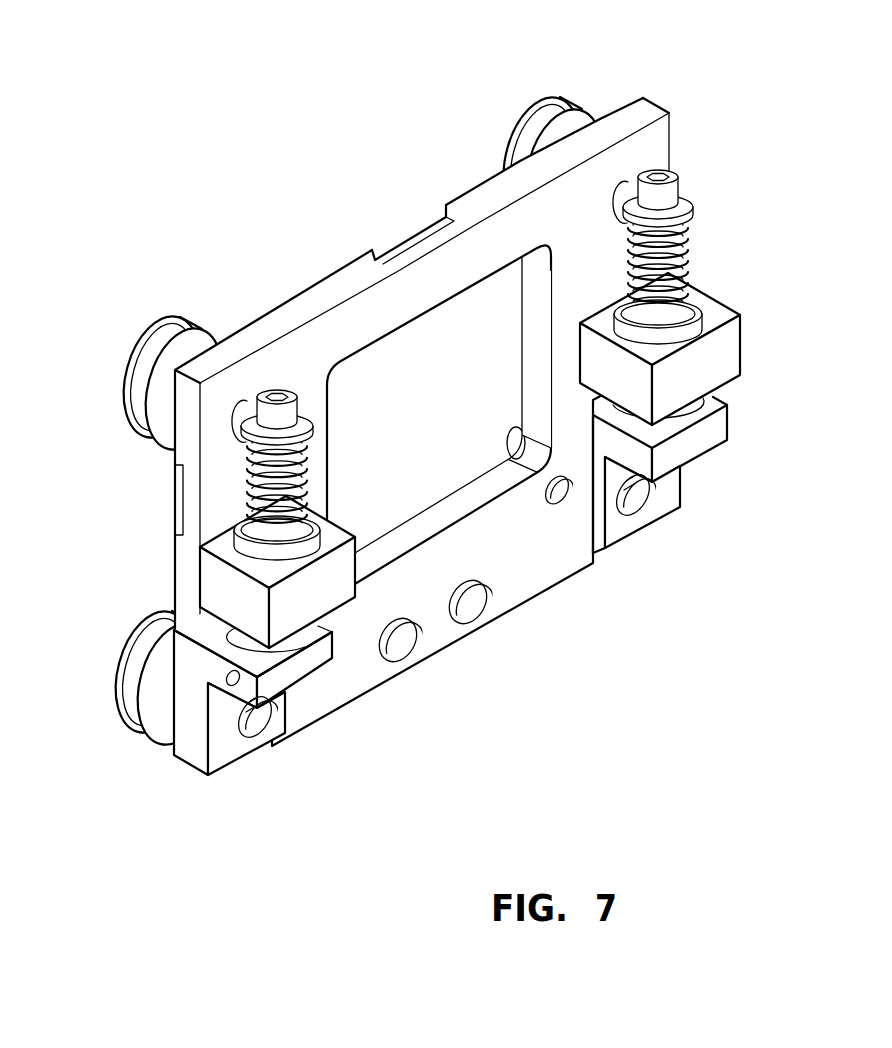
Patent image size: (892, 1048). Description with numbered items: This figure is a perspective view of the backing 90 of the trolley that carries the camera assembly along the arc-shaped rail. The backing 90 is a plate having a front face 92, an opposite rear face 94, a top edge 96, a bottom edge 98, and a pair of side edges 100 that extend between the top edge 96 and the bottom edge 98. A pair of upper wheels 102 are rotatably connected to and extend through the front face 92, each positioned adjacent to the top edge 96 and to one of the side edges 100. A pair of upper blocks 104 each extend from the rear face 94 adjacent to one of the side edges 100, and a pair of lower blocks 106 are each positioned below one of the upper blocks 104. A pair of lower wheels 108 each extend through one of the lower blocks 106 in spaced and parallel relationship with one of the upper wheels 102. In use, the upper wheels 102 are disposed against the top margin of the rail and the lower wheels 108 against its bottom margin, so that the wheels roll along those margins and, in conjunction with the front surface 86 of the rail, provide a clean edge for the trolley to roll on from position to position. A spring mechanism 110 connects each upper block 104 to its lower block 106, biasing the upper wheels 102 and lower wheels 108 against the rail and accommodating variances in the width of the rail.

The front surface 86 is at (443, 430).
The backing 90 is at (265, 330).
The front face 92 is at (466, 197).
The rear face 94 is at (558, 207).
The top edge 96 is at (558, 163).
The bottom edge 98 is at (320, 728).
The side edges 100 is at (176, 546).
The upper wheels 102 is at (580, 103).
The upper blocks 104 is at (333, 593).
The lower blocks 106 is at (315, 660).
The lower wheels 108 is at (136, 707).
The spring mechanism 110 is at (248, 497).